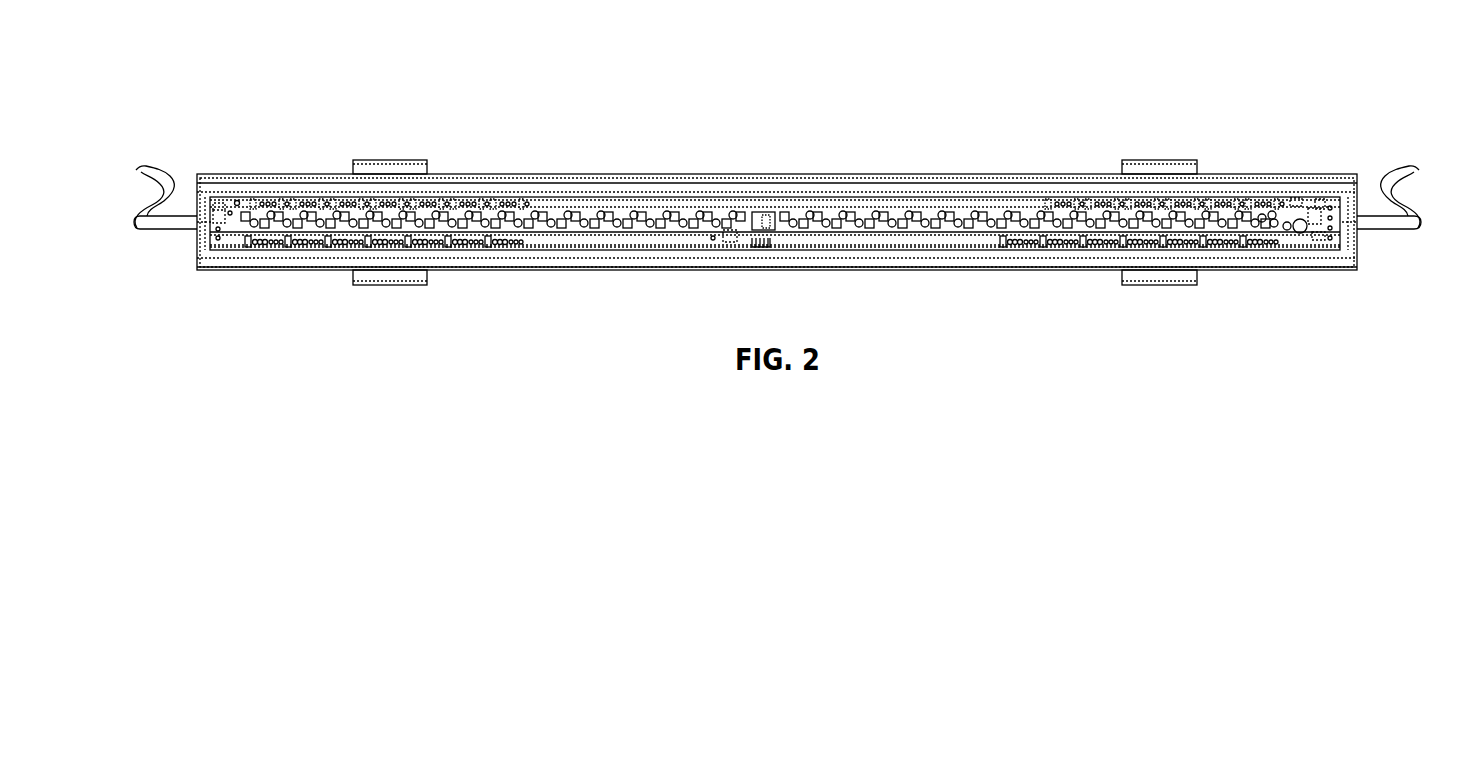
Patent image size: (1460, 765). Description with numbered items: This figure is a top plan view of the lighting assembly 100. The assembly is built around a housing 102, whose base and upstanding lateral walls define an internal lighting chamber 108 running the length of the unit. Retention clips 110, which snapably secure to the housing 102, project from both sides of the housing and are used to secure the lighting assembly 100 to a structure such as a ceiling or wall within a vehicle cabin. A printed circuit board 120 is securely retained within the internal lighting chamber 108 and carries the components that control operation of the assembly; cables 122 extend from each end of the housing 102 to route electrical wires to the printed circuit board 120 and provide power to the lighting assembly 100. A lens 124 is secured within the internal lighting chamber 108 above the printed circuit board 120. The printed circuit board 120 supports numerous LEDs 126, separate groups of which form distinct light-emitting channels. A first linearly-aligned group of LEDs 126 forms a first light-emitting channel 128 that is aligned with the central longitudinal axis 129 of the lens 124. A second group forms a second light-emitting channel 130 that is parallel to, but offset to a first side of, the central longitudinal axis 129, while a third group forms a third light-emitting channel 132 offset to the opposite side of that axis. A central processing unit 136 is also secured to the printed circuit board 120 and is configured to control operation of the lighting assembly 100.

The lighting assembly 100 is at (277, 70).
The housing 102 is at (250, 270).
The internal lighting chamber 108 is at (683, 206).
The retention clips 110 is at (403, 160).
The printed circuit board 120 is at (213, 202).
The cables 122 is at (148, 231).
The lens 124 is at (197, 200).
The LEDs 126 is at (245, 215).
The first light-emitting channel 128 is at (1276, 220).
The central longitudinal axis 129 is at (205, 226).
The second light-emitting channel 130 is at (1263, 216).
The third light-emitting channel 132 is at (1288, 229).
The central processing unit 136 is at (769, 212).